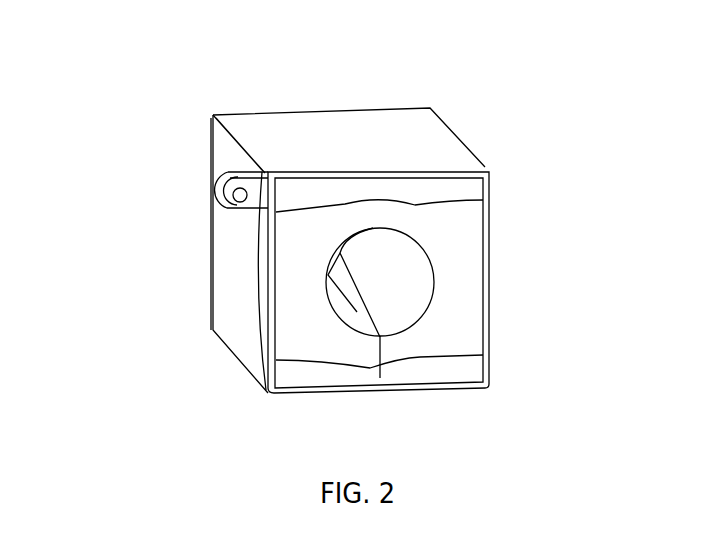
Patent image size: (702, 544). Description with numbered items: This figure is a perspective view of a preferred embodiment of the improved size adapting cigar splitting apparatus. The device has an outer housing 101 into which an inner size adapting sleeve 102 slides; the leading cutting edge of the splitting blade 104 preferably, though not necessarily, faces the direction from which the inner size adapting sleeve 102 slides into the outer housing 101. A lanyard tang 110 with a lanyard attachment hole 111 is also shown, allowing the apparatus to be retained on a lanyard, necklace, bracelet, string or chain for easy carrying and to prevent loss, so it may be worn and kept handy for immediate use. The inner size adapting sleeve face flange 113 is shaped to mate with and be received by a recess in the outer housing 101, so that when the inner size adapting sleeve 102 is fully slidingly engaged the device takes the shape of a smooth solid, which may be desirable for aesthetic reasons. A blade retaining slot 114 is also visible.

The outer housing 101 is at (306, 130).
The inner size adapting sleeve 102 is at (460, 215).
The splitting blade 104 is at (348, 282).
The lanyard tang 110 is at (220, 197).
The lanyard attachment hole 111 is at (235, 207).
The inner size adapting sleeve face flange 113 is at (420, 343).
The blade retaining slot 114 is at (390, 377).